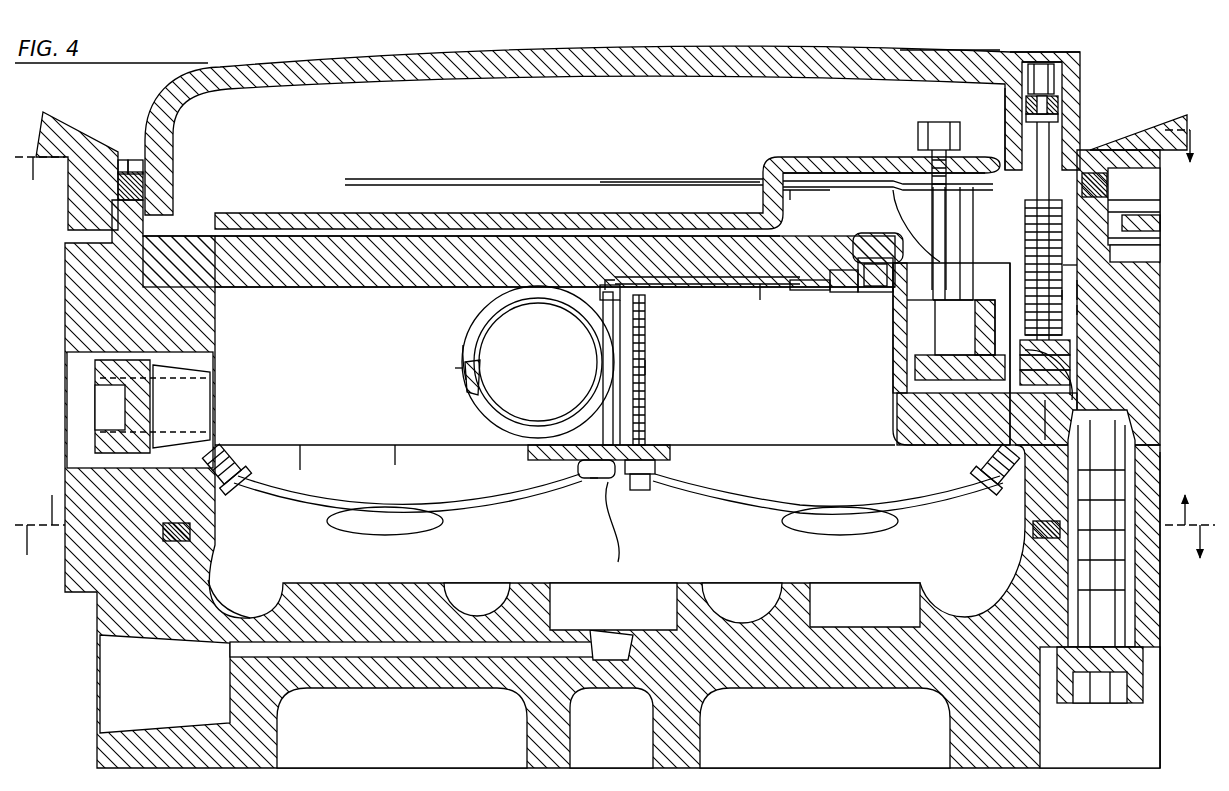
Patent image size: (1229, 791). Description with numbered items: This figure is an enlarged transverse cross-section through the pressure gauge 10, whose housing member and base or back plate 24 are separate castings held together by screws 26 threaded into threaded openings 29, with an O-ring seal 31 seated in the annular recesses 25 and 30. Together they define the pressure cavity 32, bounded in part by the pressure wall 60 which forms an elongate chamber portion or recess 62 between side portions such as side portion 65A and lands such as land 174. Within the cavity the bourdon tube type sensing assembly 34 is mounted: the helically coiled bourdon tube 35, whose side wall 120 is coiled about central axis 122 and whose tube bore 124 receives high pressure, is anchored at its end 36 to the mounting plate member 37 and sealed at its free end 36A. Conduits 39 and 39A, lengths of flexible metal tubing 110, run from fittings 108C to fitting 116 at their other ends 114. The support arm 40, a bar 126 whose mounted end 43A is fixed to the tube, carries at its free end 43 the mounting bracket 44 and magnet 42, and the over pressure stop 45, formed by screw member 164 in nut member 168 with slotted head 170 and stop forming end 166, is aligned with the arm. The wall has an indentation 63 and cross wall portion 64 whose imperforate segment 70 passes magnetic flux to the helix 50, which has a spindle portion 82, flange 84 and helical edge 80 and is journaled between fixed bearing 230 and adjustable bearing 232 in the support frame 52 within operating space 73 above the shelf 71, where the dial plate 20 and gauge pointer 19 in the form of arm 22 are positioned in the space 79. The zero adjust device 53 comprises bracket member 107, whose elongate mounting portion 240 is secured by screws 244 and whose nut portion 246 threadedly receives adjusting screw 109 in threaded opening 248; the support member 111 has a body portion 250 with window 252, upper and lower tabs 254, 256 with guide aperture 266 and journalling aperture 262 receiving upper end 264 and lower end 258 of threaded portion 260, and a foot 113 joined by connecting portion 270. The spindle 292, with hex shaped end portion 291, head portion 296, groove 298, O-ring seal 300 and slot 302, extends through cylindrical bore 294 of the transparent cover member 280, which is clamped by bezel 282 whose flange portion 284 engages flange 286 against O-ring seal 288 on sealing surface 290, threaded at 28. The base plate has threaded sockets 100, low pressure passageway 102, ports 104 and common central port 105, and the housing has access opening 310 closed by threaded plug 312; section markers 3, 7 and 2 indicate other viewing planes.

The pressure gauge 10 is at (775, 45).
The space 79 is at (265, 118).
The cover member 280 is at (945, 66).
The cylindrical bore 294 is at (1015, 58).
The slot 302 is at (1050, 60).
The head portion 296 is at (1055, 80).
The groove 298 is at (1058, 102).
The O-ring seal 300 is at (1058, 117).
The spindle 292 is at (1050, 150).
The bezel 282 is at (1160, 128).
The section line 3 is at (614, 167).
The adjustable bearing 232 is at (940, 125).
The spirally contoured flange 84 is at (930, 200).
The nut portion 246 is at (1100, 175).
The O-ring seal 288 is at (1100, 168).
The hex shaped end portion 291 is at (1134, 187).
The guide aperture 266 is at (1134, 205).
The upper tab 254 is at (1160, 222).
The upper end 264 is at (1160, 238).
The bracket member 107 is at (1135, 252).
The threaded opening 248 is at (1080, 262).
The elongate mounting portion 240 is at (1065, 280).
The threaded portion 260 is at (1160, 286).
The adjusting screw 109 is at (1066, 298).
The zero adjust device 53 is at (1080, 310).
The body portion 250 is at (1060, 330).
The lower end 258 is at (1072, 347).
The lower tab 256 is at (1072, 362).
The operating space 73 is at (1072, 378).
The journalling aperture 262 is at (1075, 386).
The support member 111 is at (1060, 419).
The recessed ledge or shelf 71 is at (1038, 360).
The connecting portion 270 is at (965, 405).
The foot 113 is at (900, 412).
The fixed bearing 230 is at (945, 350).
The window 252 is at (1000, 335).
The cross wall portion 64 is at (885, 300).
The imperforate segment 70 is at (905, 320).
The magnet 42 is at (870, 295).
The mounting bracket 44 is at (838, 294).
The free end 43 is at (795, 292).
The bar 126 is at (762, 300).
The support arm 40 is at (717, 286).
The mounted end 43A is at (625, 305).
The over pressure stop 45 is at (652, 368).
The screw member 164 is at (648, 400).
The nut member 168 is at (658, 468).
The slotted head 170 is at (652, 485).
The mounting plate member 37 is at (672, 455).
The anchored end 36 is at (600, 440).
The free end 36A is at (608, 320).
The central axis 122 is at (535, 360).
The tube bore 124 is at (465, 385).
The side wall 120 is at (465, 345).
The bourdon tube 35 is at (452, 368).
The stop forming end 166 is at (602, 292).
The chamber portion or recess 62 is at (346, 302).
The pressure wall 60 is at (456, 262).
The dial plate 20 is at (488, 214).
The arm 22 is at (565, 179).
The gauge pointer 19 is at (677, 172).
The support frame 52 is at (772, 158).
The helix 50 is at (856, 192).
The indentation 63 is at (835, 240).
The spindle portion 82 is at (925, 225).
The screws 244 is at (915, 240).
The helical edge 80 is at (960, 240).
The flange 286 is at (122, 160).
The flange portion 284 is at (138, 160).
The sealing surface 290 is at (145, 190).
The threaded securement 28 is at (100, 228).
The pressure cavity 32 is at (255, 325).
The access opening 310 is at (200, 372).
The threaded plug 312 is at (200, 413).
The side portion 65A is at (305, 440).
The land 174 is at (398, 455).
The flexible metal tubing 110 is at (472, 503).
The fitting 116 is at (580, 476).
The other ends 114 is at (612, 515).
The bourdon tube type sensing assembly 34 is at (596, 518).
The conduit 39 is at (480, 515).
The conduit 39A is at (715, 510).
The fitting 108C is at (225, 495).
The annular recess 25 is at (165, 540).
The annular recess 30 is at (200, 548).
The threaded sockets 100 is at (112, 648).
The ports 104 is at (345, 642).
The common central port 105 is at (612, 632).
The low pressure passageway 102 is at (425, 690).
The base or back plate 24 is at (1163, 628).
The screws 26 is at (1150, 700).
The threaded openings 29 is at (1120, 478).
The O-ring seal 31 is at (1035, 540).
The section line 7 is at (615, 506).
The section line 2 is at (613, 542).